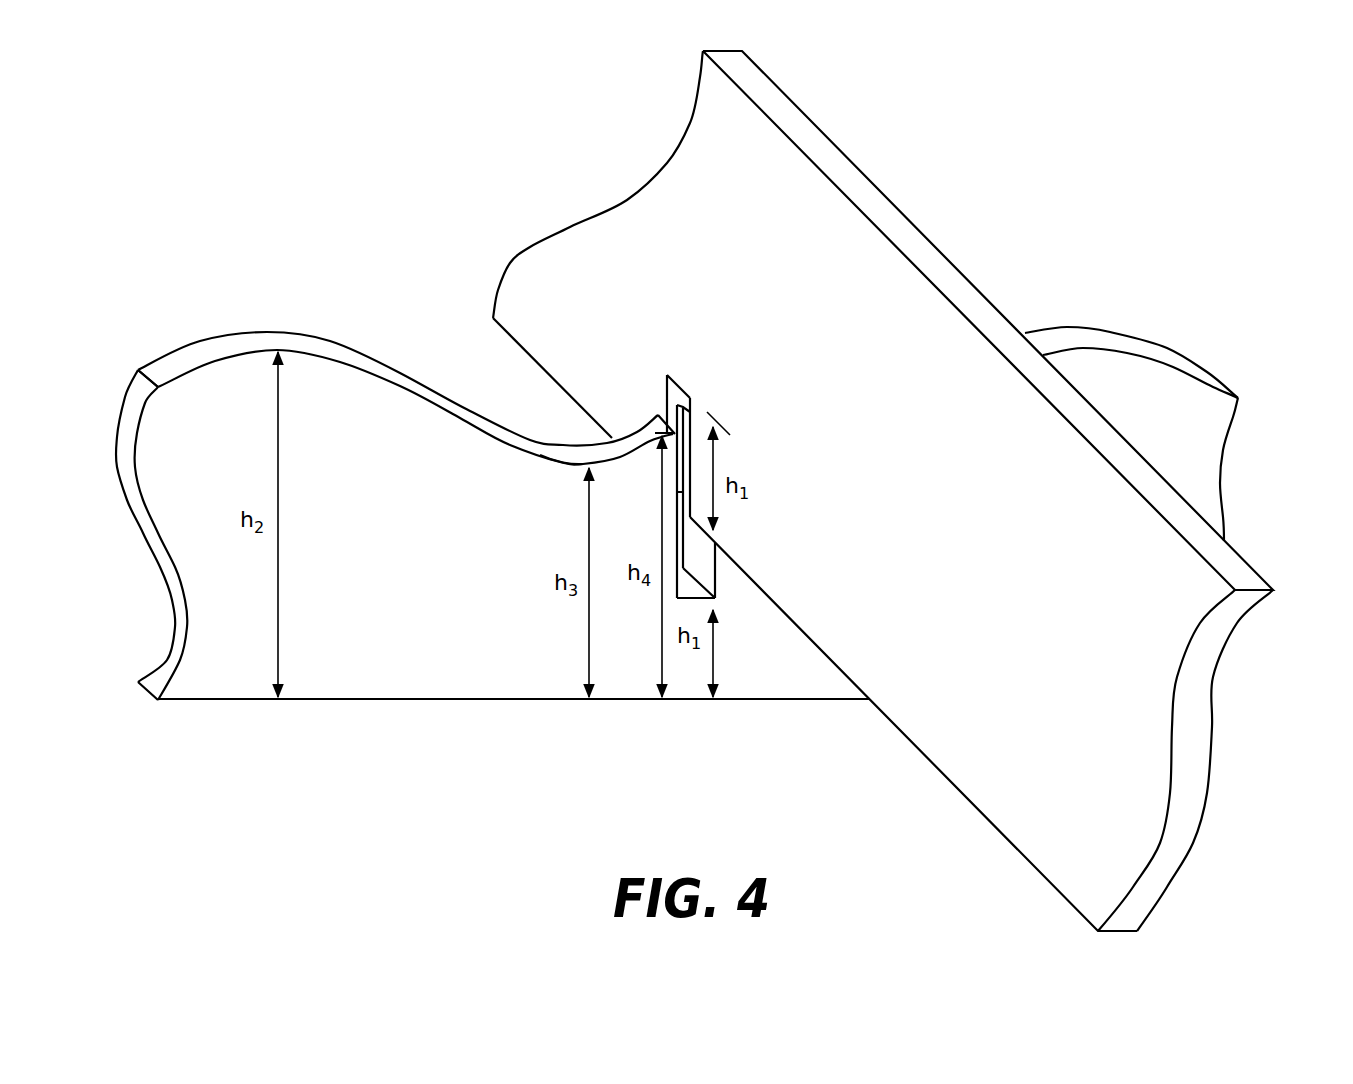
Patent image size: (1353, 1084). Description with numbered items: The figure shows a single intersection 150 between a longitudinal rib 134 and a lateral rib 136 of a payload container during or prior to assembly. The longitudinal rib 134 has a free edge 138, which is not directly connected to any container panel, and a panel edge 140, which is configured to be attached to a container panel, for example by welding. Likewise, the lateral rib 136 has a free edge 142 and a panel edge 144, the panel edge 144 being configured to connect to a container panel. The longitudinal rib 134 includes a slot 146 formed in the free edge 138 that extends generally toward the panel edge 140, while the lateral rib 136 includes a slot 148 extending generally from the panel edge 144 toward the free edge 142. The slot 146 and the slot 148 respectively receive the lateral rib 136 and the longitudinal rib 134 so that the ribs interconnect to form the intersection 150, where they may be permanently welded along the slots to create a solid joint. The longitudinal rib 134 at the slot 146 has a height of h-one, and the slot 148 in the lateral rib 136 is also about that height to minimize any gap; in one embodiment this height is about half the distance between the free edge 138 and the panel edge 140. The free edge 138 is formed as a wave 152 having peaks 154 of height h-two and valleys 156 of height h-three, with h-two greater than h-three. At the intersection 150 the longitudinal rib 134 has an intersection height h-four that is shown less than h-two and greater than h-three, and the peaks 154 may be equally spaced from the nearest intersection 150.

The longitudinal rib 134 is at (365, 672).
The lateral rib 136 is at (1143, 665).
The free edge 138 is at (436, 393).
The panel edge 140 is at (517, 700).
The free edge 142 is at (965, 298).
The panel edge 144 is at (995, 827).
The slot 146 is at (717, 583).
The slot 148 is at (683, 378).
The intersection 150 is at (661, 410).
The wave 152 is at (272, 307).
The peaks 154 is at (217, 362).
The valleys 156 is at (567, 466).